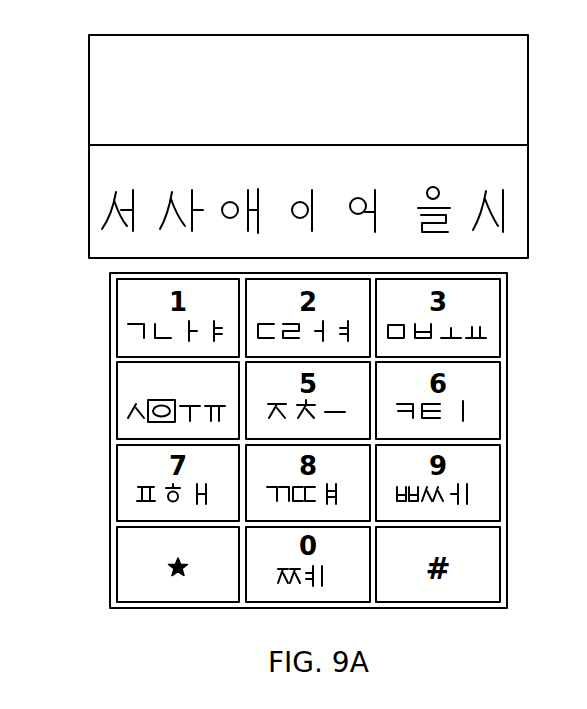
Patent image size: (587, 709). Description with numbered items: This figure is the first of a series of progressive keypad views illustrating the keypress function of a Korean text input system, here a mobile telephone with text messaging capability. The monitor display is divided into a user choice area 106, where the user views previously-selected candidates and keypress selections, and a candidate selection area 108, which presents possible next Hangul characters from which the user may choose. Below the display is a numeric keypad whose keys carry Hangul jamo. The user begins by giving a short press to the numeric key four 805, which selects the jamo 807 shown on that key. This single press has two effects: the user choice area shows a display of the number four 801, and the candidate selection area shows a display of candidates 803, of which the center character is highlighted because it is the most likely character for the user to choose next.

The display of the number "4" 801 is at (107, 96).
The user choice area 106 is at (450, 66).
The display of candidates 803 is at (105, 208).
The candidate selection area 108 is at (497, 176).
The numeric key 4 805 is at (122, 383).
The jamo 807 is at (148, 416).